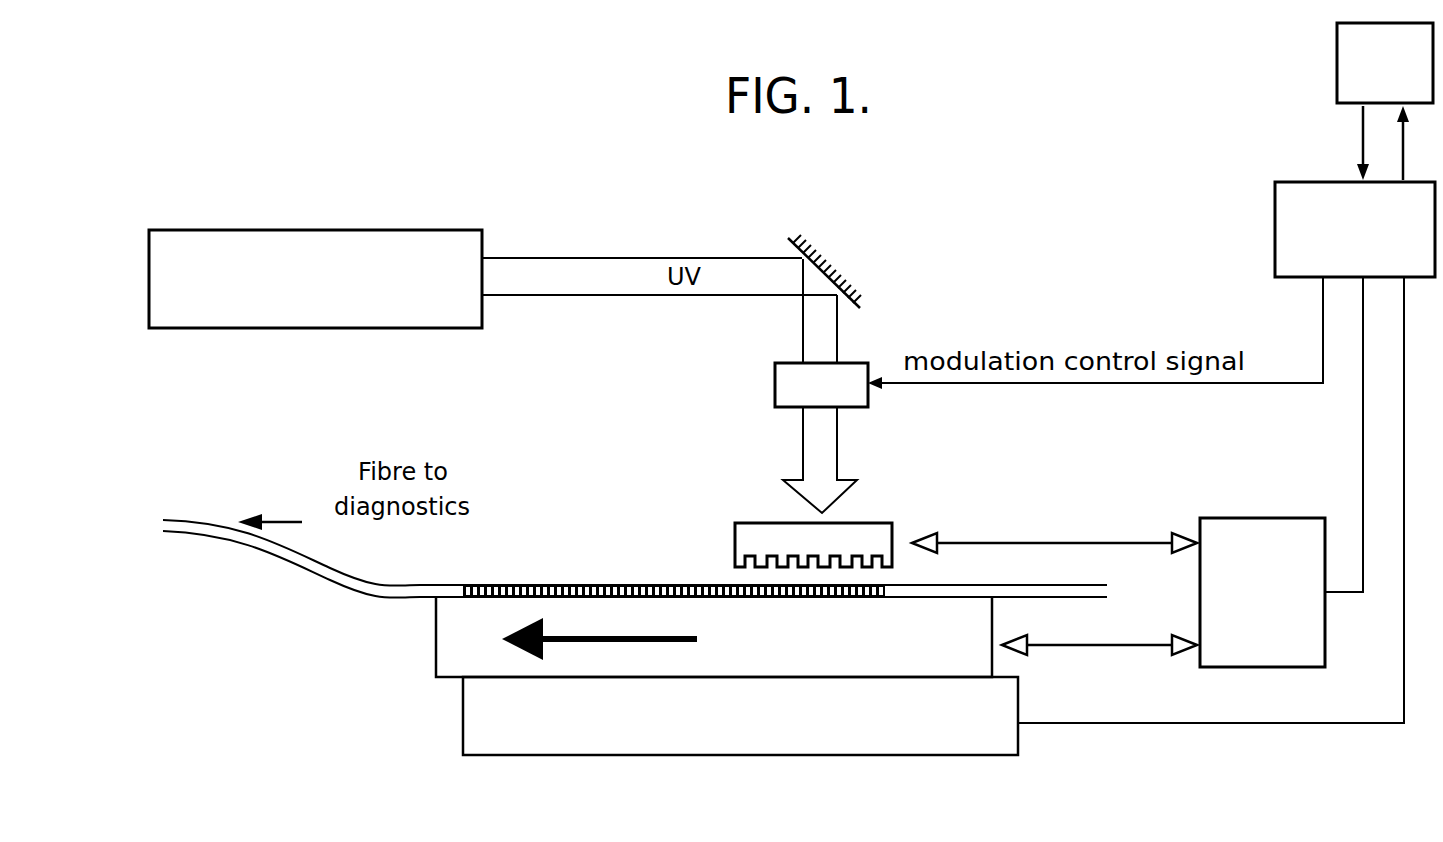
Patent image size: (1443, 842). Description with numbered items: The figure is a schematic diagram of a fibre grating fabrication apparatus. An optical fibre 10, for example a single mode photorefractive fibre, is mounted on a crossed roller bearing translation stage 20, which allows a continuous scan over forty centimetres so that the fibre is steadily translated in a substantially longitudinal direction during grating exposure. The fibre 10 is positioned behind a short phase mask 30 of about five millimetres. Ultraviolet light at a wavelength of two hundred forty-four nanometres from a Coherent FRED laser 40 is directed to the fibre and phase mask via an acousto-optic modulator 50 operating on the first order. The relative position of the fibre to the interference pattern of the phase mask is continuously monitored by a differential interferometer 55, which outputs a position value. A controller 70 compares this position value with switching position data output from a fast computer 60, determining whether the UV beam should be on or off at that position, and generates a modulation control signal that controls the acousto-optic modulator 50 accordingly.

The optical fibre 10 is at (422, 585).
The translation stage 20 is at (443, 681).
The phase mask 30 is at (868, 523).
The Coherent FRED laser 40 is at (330, 230).
The acousto-optic modulator 50 is at (792, 363).
The differential interferometer 55 is at (1290, 667).
The computer 60 is at (1337, 61).
The controller 70 is at (1275, 219).